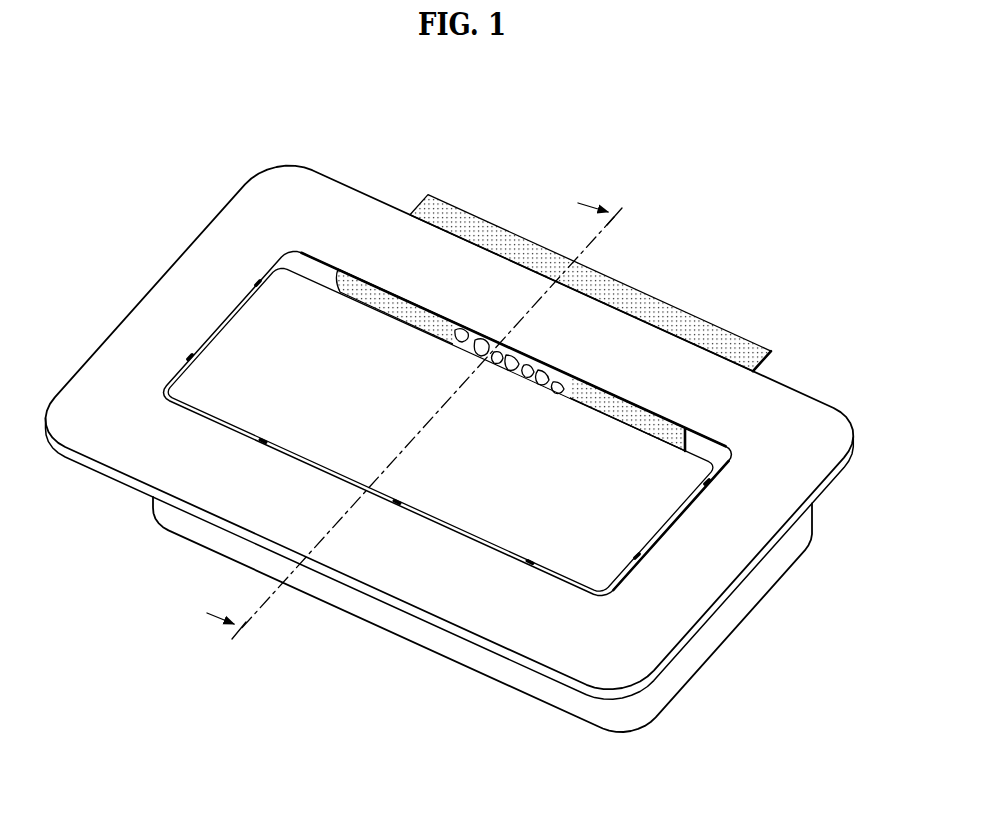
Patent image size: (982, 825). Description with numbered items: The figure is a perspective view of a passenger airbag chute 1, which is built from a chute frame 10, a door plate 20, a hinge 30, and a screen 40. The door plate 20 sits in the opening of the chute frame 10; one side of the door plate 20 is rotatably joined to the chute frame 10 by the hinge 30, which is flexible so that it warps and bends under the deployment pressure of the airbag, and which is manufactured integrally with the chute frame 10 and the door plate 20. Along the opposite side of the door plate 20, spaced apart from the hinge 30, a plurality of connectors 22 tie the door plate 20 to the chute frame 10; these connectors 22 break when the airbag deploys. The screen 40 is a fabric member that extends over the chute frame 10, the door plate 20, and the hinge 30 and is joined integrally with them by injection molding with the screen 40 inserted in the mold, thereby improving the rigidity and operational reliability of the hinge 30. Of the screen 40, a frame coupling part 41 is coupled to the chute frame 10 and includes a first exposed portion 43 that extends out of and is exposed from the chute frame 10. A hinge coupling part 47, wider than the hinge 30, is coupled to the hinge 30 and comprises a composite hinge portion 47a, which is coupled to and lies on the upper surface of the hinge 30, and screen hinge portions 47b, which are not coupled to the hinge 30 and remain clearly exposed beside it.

The passenger airbag chute 1 is at (788, 108).
The chute frame 10 is at (157, 320).
The door plate 20 is at (250, 340).
The connectors 22 is at (707, 484).
The hinge 30 is at (547, 377).
The screen 40 is at (698, 428).
The frame coupling part 41 is at (713, 337).
The first exposed portion 43 is at (590, 283).
The hinge coupling part 47 is at (502, 84).
The composite hinge portion 47a is at (483, 345).
The screen hinge portions 47b is at (394, 305).